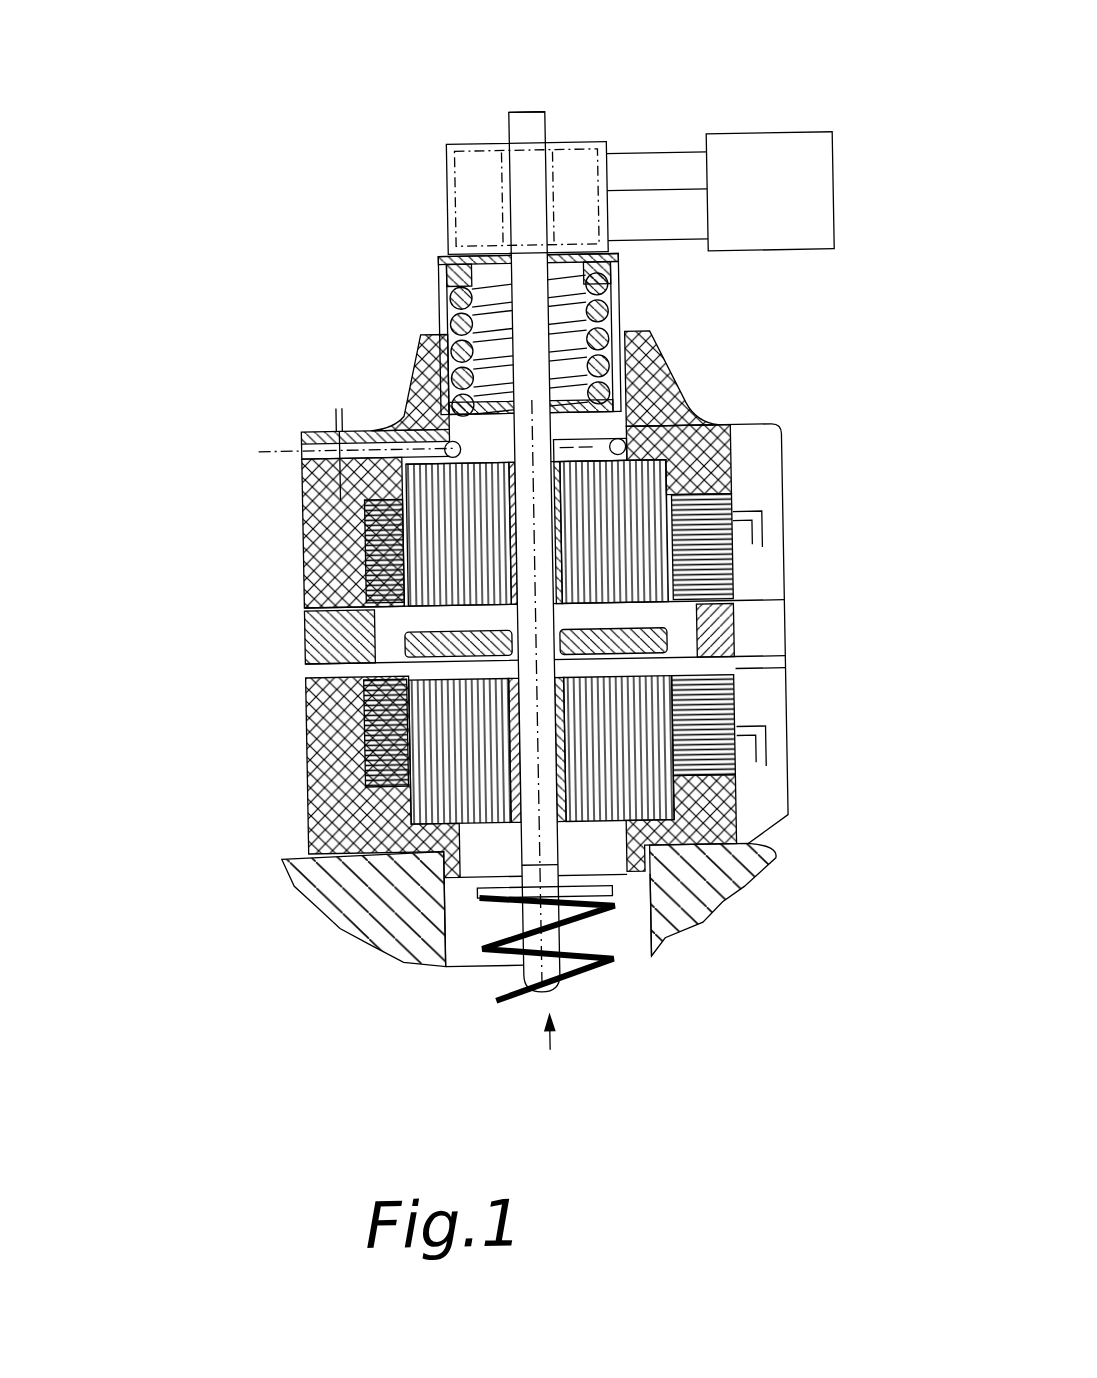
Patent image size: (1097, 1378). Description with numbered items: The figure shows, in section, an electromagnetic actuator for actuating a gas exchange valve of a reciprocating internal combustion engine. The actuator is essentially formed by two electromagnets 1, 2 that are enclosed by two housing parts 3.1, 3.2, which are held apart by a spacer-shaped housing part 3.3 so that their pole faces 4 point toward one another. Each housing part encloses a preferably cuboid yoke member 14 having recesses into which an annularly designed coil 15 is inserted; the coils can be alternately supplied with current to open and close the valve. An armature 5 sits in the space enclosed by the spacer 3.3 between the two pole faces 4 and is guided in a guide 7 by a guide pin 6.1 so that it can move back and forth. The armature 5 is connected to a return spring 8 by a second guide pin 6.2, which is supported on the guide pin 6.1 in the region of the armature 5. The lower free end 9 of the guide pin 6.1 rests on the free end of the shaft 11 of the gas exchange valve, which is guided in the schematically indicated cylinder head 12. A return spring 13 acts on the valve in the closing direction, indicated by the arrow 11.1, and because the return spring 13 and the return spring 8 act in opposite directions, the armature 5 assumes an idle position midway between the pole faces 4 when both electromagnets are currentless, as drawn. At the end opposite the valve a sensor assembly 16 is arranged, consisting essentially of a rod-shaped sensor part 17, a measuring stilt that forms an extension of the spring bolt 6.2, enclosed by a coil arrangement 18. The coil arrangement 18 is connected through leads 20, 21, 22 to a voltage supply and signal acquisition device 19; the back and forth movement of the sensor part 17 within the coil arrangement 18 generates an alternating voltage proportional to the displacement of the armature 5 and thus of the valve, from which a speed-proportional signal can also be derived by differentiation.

The electromagnet 1 is at (259, 520).
The electromagnet 2 is at (287, 798).
The housing part 3.1 is at (304, 466).
The housing part 3.2 is at (301, 824).
The housing part 3.3 is at (301, 642).
The pole face 4 is at (302, 615).
The armature 5 is at (722, 633).
The guide pin 6.1 is at (730, 801).
The guide pin 6.2 is at (548, 450).
The guide 7 is at (507, 542).
The return spring 8 is at (611, 330).
The lower free end 9 is at (527, 851).
The shaft 11 is at (572, 977).
The arrow 11.1 is at (543, 1050).
The cylinder head 12 is at (724, 898).
The return spring 13 is at (555, 915).
The yoke member 14 is at (641, 499).
The coil 15 is at (373, 457).
The sensor assembly 16 is at (423, 187).
The rod-shaped sensor part 17 is at (555, 128).
The coil arrangement 18 is at (473, 160).
The voltage supply and signal acquisition device 19 is at (759, 143).
The lead 20 is at (650, 148).
The lead 21 is at (636, 185).
The lead 22 is at (684, 236).